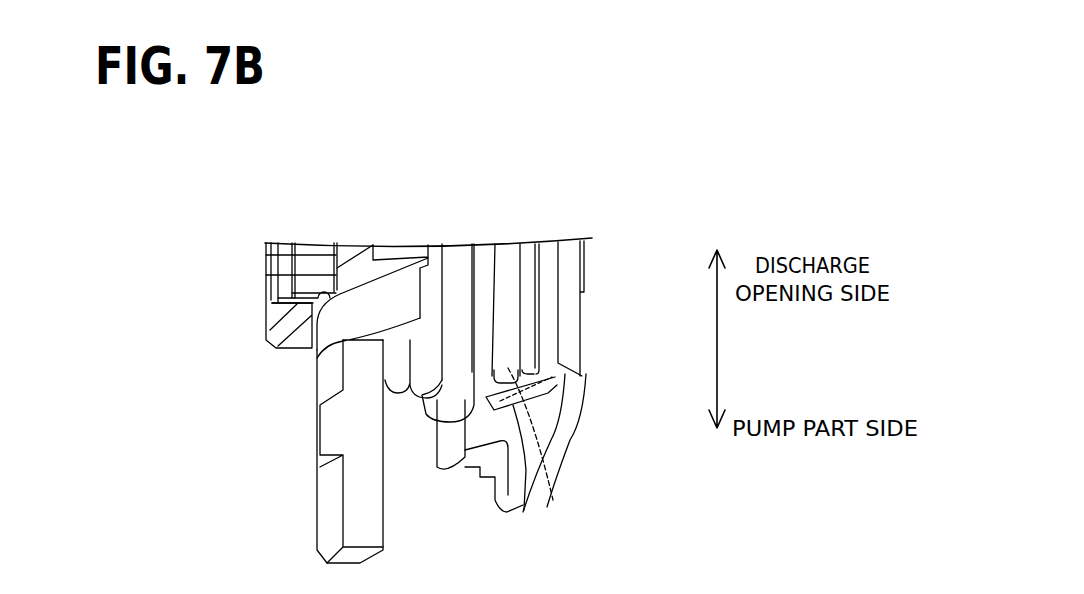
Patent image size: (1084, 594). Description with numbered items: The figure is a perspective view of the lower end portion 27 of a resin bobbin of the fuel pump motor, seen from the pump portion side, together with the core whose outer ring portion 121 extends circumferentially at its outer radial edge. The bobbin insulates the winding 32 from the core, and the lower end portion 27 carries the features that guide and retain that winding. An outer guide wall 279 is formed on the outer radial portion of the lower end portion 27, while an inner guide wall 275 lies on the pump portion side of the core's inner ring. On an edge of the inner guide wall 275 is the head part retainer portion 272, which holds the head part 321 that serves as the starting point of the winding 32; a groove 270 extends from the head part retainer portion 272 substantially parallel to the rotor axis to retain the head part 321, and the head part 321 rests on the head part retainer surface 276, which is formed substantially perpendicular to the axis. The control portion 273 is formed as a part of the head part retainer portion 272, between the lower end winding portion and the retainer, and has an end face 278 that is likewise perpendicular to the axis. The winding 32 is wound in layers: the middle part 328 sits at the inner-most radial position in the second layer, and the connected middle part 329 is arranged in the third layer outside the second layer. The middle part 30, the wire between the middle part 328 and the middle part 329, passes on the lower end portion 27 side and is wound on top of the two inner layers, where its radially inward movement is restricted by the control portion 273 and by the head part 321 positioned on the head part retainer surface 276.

The lower end portion 27 is at (593, 228).
The winding 32 is at (442, 243).
The outer ring portion 121 is at (280, 273).
The outer guide wall 279 is at (302, 499).
The middle part 328 is at (483, 263).
The middle part 329 is at (419, 405).
The control portion 273 is at (530, 258).
The groove 270 is at (550, 279).
The head part retainer portion 272 is at (565, 351).
The head part 321 is at (540, 394).
The inner guide wall 275 is at (574, 466).
The head part retainer surface 276 is at (543, 451).
The end face 278 is at (527, 503).
The middle part 30 is at (461, 467).